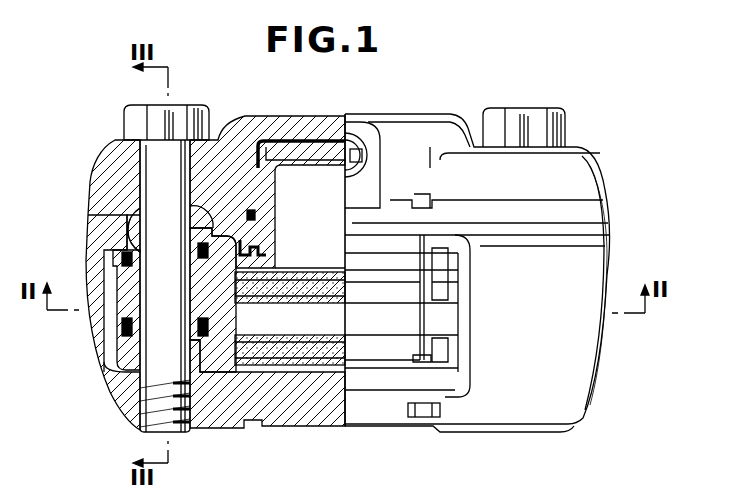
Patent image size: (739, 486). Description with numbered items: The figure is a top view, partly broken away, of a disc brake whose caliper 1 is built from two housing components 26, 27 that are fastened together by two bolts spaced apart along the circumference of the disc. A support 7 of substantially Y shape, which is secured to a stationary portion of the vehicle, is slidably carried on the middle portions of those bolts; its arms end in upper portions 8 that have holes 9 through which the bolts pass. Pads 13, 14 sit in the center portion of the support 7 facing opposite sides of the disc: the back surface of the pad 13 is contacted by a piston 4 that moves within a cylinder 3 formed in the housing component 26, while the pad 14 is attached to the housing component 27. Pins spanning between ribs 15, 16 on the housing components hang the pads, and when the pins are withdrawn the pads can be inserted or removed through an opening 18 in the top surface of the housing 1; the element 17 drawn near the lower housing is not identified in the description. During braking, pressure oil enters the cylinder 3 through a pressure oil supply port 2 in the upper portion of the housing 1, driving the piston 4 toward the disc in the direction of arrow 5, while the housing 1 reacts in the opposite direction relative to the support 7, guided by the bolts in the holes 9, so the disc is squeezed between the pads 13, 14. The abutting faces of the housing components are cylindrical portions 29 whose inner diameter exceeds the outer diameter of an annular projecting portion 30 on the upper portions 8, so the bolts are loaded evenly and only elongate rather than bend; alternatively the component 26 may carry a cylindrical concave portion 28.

The caliper 1 is at (610, 404).
The pressure oil supply port 2 is at (367, 127).
The cylinder 3 is at (291, 145).
The piston 4 is at (327, 157).
The arrow 5 is at (318, 234).
The support 7 is at (210, 298).
The upper portions 8 is at (117, 307).
The holes 9 is at (128, 225).
The pad 13 is at (285, 283).
The pad 14 is at (263, 350).
The rib 15 is at (398, 220).
The rib 16 is at (402, 385).
The bolt 17 is at (426, 418).
The opening 18 is at (303, 332).
The housing component 26 is at (106, 167).
The housing component 27 is at (112, 388).
The cylindrical concave portion 28 is at (201, 210).
The cylindrical portions 29 is at (214, 247).
The annular projecting portion 30 is at (119, 334).